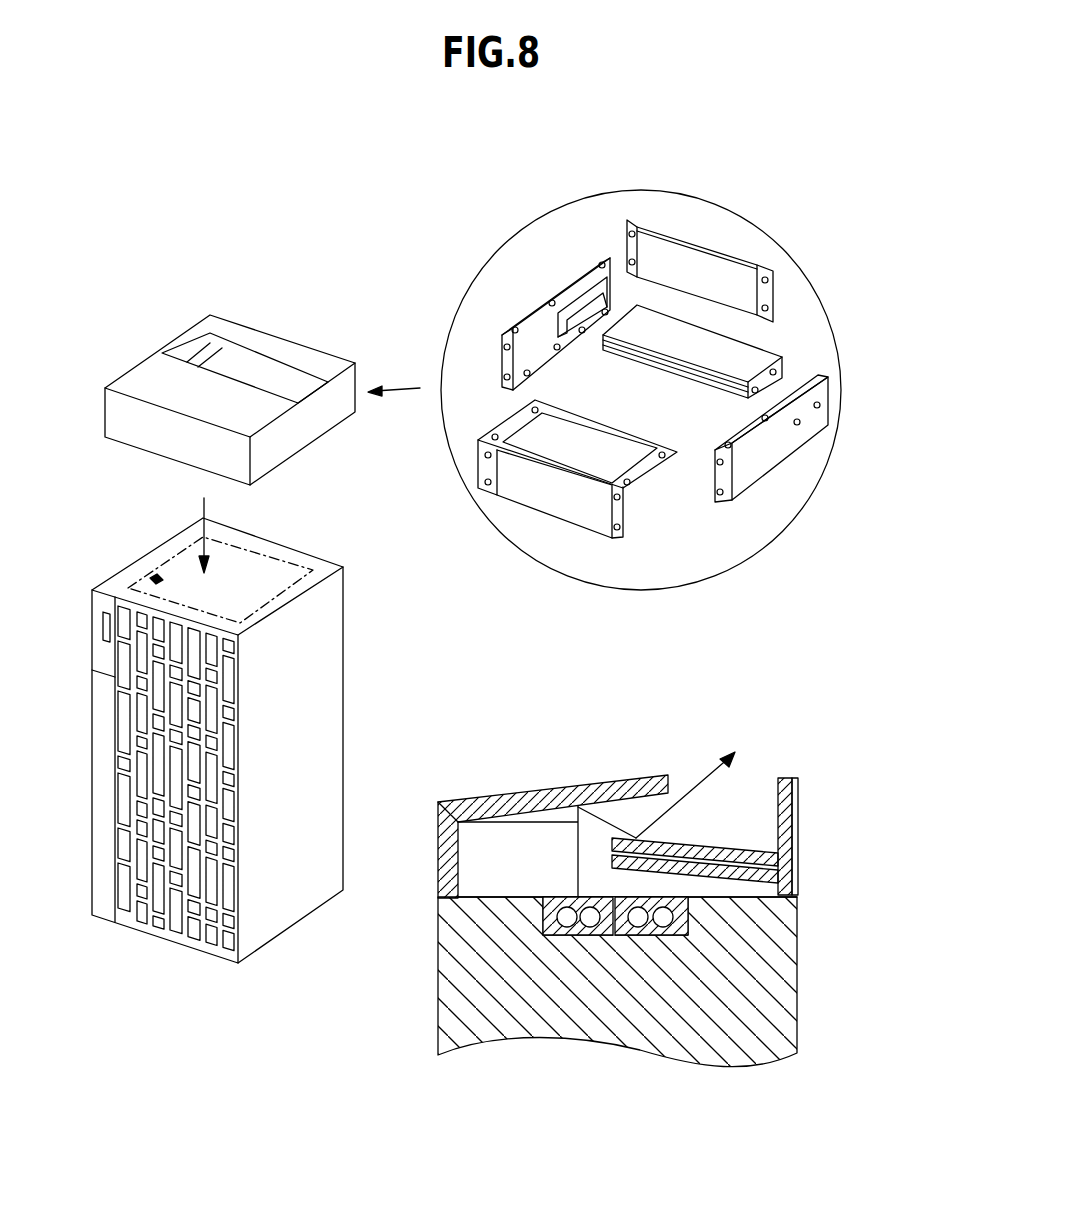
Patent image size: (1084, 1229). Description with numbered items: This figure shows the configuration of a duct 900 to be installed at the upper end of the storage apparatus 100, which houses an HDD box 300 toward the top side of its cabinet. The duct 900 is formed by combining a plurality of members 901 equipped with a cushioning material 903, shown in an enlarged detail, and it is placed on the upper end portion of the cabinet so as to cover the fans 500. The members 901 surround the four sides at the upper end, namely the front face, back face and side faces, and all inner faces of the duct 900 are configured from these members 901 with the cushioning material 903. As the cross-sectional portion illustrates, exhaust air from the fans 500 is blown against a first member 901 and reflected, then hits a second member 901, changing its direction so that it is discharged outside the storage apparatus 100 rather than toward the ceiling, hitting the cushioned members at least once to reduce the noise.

The storage apparatus 100 is at (234, 987).
The duct 900 is at (300, 427).
The member equipped with a cushioning material 901 is at (797, 428).
The cushioning material 903 is at (445, 858).
The fan 500 is at (665, 913).
The HDD box 300 is at (785, 993).